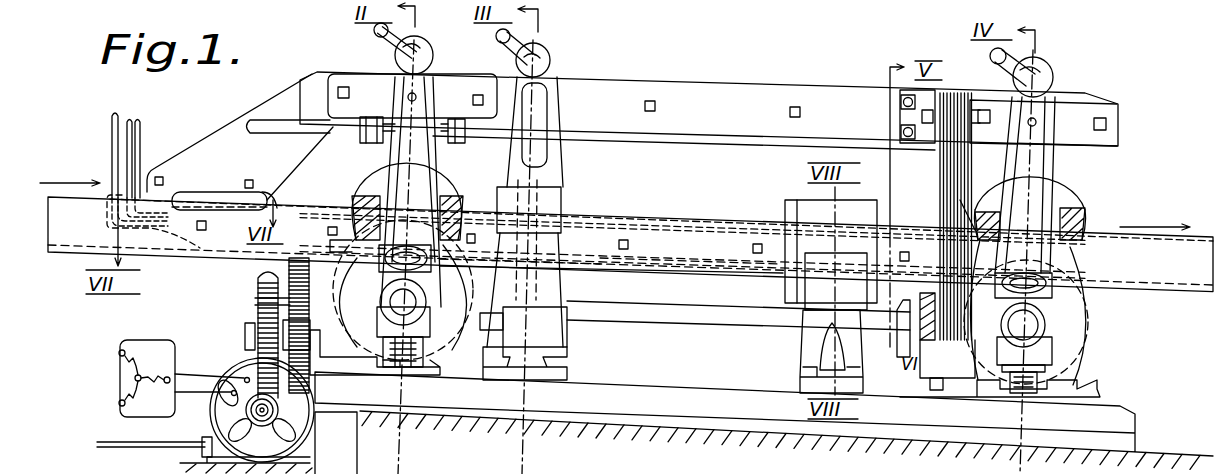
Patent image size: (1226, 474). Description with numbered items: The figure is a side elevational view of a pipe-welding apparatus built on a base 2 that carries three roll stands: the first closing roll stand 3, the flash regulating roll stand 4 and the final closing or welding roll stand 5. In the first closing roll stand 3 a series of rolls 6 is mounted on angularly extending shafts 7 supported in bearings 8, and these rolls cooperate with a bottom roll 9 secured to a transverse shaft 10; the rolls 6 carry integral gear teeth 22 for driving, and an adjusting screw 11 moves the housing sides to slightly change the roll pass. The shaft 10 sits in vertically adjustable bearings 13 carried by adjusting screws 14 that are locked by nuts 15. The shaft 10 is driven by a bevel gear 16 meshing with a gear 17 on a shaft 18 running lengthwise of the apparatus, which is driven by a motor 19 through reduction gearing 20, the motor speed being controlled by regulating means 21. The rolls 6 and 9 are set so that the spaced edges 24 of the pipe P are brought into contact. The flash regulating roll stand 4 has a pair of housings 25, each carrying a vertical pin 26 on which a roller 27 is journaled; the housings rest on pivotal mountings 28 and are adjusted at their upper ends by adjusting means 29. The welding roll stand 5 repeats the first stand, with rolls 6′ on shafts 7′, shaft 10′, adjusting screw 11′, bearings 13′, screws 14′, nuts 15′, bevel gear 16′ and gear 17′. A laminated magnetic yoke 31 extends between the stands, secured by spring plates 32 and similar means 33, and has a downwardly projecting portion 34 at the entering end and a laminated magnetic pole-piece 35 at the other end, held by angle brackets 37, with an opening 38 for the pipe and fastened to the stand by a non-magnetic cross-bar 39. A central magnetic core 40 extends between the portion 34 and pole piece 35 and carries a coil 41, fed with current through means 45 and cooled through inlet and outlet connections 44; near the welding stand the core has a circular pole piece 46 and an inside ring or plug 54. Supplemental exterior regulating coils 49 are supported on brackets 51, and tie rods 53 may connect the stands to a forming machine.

The base 2 is at (679, 392).
The first closing roll stand 3 is at (446, 166).
The flash regulating roll stand 4 is at (556, 359).
The final closing or welding roll stand 5 is at (1060, 322).
The rolls 6 is at (380, 168).
The rolls of welding roll stand 6′ is at (1070, 206).
The angularly extending shafts 7 is at (458, 196).
The angularly extending shafts of welding roll stand 7′ is at (1072, 262).
The bearings 8 is at (331, 242).
The bottom roll 9 is at (336, 443).
The shaft 10 is at (387, 352).
The shaft of welding roll stand 10′ is at (1052, 332).
The adjusting screw 11 is at (393, 58).
The adjusting screw of welding roll stand 11′ is at (1045, 69).
The vertically adjustable bearings 13 is at (432, 276).
The vertically adjustable bearings of welding roll stand 13′ is at (1032, 332).
The adjusting screws 14 is at (447, 353).
The adjusting screws of welding roll stand 14′ is at (1052, 386).
The nuts 15 is at (411, 360).
The nuts of welding roll stand 15′ is at (1032, 393).
The bevel gear 16 is at (287, 300).
The bevel gear of welding roll stand 16′ is at (1050, 297).
The gear 17 is at (360, 362).
The gear of welding roll stand 17′ is at (945, 380).
The shaft 18 is at (683, 305).
The motor 19 is at (244, 371).
The reduction gearing 20 is at (262, 281).
The regulating means 21 is at (118, 378).
The integral gear teeth 22 is at (372, 191).
The spaced edges 24 is at (626, 236).
The housings 25 is at (553, 146).
The pin 26 is at (562, 196).
The rollers 27 is at (582, 262).
The pivotal mountings 28 is at (580, 334).
The adjusting means 29 is at (551, 59).
The laminated magnetic yoke 31 is at (699, 90).
The spring plates 32 is at (451, 86).
The supporting means 33 is at (1085, 110).
The downwardly projecting portion 34 is at (280, 108).
The laminated magnetic pole-piece 35 is at (948, 163).
The angle brackets 37 is at (910, 113).
The opening 38 is at (962, 200).
The non-magnetic cross-bar 39 is at (1000, 404).
The central magnetic core 40 is at (706, 236).
The coil 41 is at (751, 264).
The inlet and outlet connections 44 is at (140, 150).
The current supply means 45 is at (112, 137).
The circular pole piece 46 is at (940, 206).
The supplemental exterior regulating coils 49 is at (811, 207).
The brackets 51 is at (830, 319).
The tie rods 53 is at (267, 136).
The inside ring or plug 54 is at (1082, 229).
The pipe P is at (657, 220).